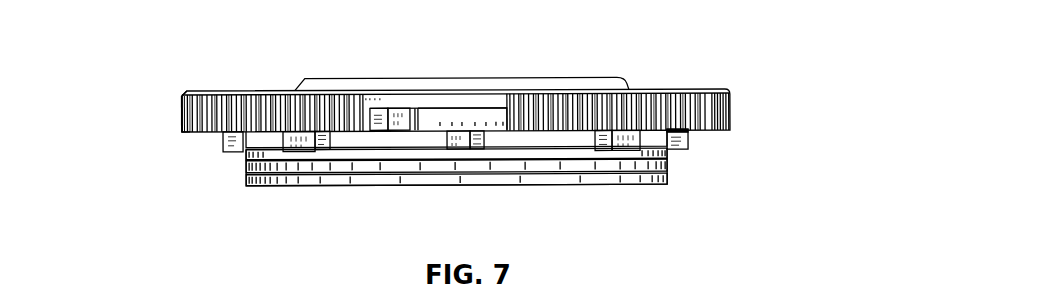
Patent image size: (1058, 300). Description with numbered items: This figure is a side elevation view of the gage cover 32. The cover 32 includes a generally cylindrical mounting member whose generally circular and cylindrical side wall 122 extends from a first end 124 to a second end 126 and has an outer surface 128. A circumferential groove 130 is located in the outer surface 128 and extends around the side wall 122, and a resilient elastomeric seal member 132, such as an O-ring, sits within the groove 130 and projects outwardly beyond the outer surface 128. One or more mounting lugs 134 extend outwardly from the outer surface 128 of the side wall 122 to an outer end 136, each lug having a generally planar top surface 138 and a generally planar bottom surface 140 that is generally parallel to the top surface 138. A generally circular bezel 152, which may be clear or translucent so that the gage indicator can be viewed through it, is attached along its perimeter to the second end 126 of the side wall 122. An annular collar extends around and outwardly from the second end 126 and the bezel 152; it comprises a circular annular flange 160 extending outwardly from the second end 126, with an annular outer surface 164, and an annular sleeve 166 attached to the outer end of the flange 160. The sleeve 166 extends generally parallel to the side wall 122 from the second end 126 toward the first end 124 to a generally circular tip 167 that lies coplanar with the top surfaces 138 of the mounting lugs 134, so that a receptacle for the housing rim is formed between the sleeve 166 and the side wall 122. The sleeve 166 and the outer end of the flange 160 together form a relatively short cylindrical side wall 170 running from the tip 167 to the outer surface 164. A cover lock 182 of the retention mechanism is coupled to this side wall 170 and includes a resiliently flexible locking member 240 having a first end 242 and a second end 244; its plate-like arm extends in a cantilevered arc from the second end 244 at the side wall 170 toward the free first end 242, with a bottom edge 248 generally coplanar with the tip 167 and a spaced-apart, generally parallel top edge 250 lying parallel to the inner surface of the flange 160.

The cover 32 is at (697, 55).
The side wall 122 is at (368, 185).
The first end 124 is at (667, 184).
The second end 126 is at (641, 133).
The outer surface 128 is at (666, 176).
The circumferential groove 130 is at (666, 157).
The seal member 132 is at (600, 161).
The mounting lug 134 is at (226, 151).
The outer end 136 is at (688, 141).
The top surface 138 is at (300, 133).
The bottom surface 140 is at (303, 152).
The bezel 152 is at (530, 80).
The flange 160 is at (235, 89).
The outer surface 164 is at (208, 88).
The sleeve 166 is at (181, 103).
The tip 167 is at (182, 133).
The side wall 170 is at (181, 112).
The cover lock 182 is at (413, 135).
The locking member 240 is at (431, 121).
The first end 242 is at (394, 110).
The second end 244 is at (507, 131).
The bottom edge 248 is at (499, 132).
The top edge 250 is at (485, 110).